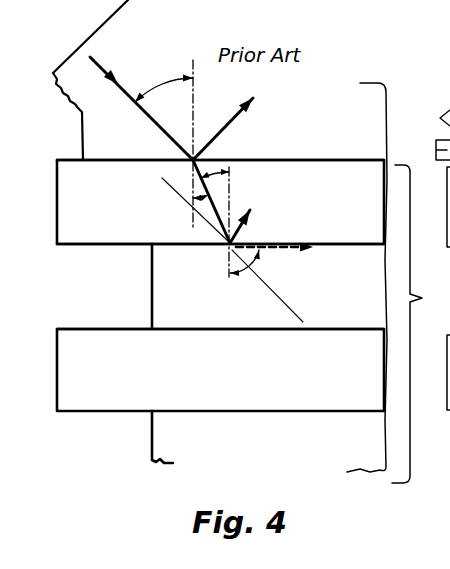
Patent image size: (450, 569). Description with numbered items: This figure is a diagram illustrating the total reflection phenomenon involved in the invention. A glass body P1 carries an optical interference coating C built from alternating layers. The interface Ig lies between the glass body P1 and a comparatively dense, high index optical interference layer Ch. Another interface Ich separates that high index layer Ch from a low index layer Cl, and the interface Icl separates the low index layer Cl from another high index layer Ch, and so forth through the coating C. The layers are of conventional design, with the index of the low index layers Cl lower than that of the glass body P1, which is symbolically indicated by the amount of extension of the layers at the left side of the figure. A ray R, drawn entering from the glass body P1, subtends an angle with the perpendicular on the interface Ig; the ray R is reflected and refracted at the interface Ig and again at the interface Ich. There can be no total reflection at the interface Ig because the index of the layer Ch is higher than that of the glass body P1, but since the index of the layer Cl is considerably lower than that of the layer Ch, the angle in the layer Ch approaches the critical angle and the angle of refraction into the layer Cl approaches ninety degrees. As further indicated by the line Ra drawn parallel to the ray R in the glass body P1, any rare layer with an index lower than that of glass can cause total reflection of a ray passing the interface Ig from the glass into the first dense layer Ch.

The ray R is at (141, 97).
The glass body P1 is at (93, 137).
The high index layer Ch is at (70, 200).
The low index layer Cl is at (160, 283).
The interface between glass body and high index layer Ig is at (357, 161).
The interface between high index layer and low index layer Ich is at (332, 233).
The interface between low index layer and high index layer Icl is at (298, 330).
The line parallel to ray R Ra is at (172, 188).
The optical interference coating C is at (420, 324).